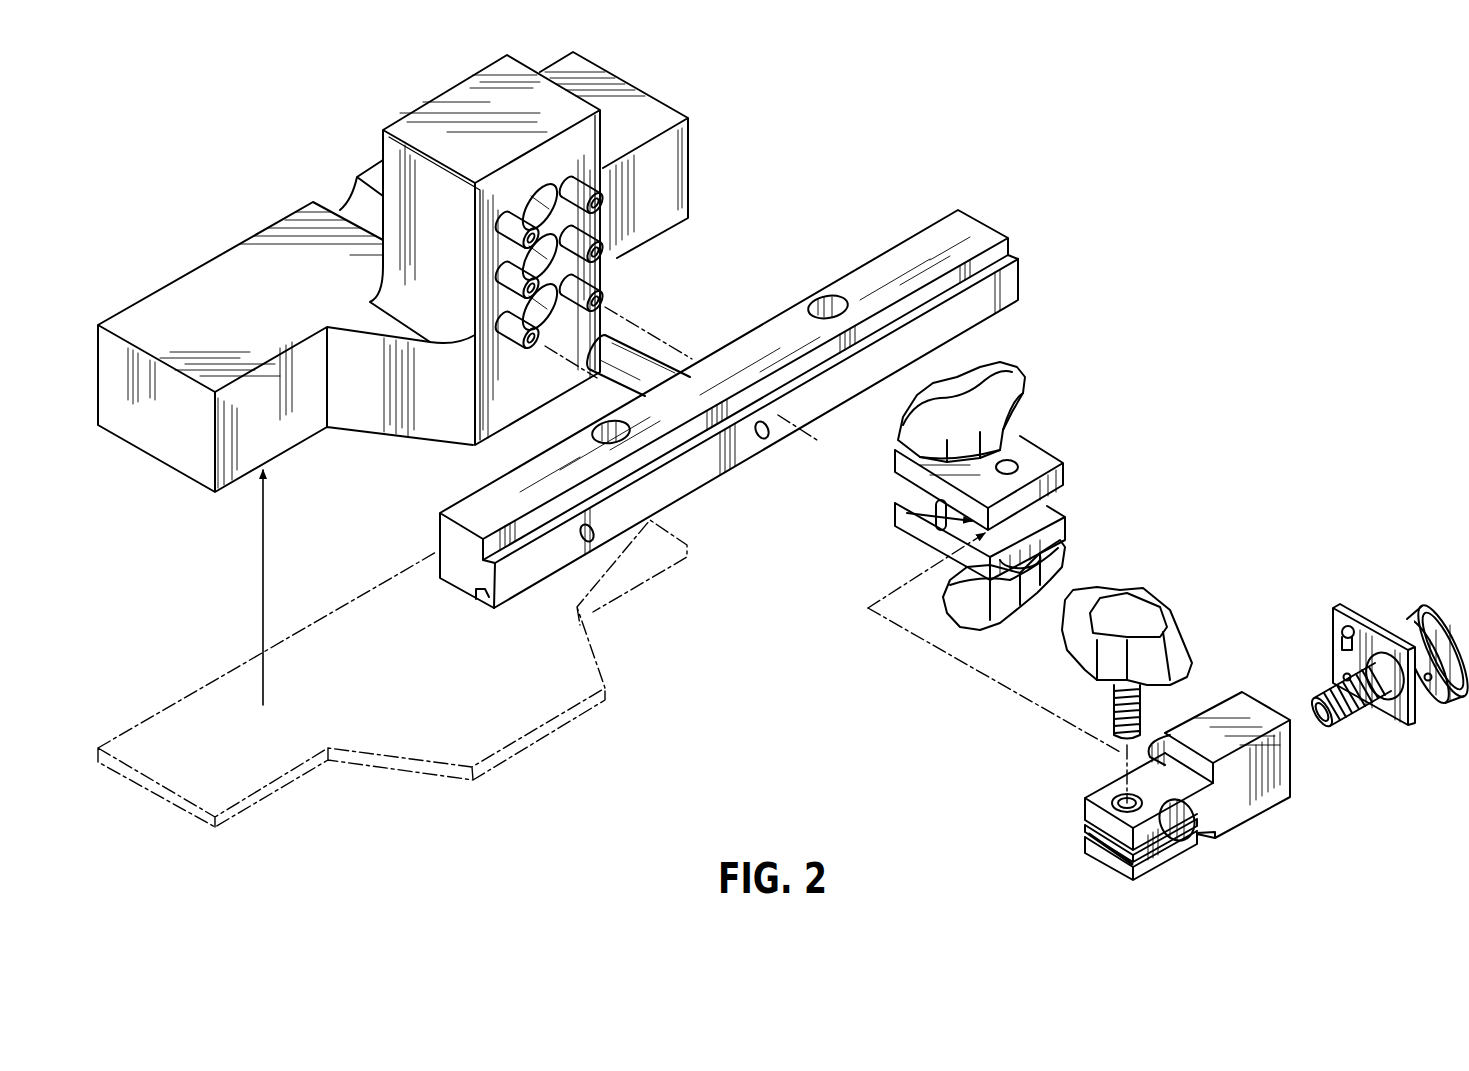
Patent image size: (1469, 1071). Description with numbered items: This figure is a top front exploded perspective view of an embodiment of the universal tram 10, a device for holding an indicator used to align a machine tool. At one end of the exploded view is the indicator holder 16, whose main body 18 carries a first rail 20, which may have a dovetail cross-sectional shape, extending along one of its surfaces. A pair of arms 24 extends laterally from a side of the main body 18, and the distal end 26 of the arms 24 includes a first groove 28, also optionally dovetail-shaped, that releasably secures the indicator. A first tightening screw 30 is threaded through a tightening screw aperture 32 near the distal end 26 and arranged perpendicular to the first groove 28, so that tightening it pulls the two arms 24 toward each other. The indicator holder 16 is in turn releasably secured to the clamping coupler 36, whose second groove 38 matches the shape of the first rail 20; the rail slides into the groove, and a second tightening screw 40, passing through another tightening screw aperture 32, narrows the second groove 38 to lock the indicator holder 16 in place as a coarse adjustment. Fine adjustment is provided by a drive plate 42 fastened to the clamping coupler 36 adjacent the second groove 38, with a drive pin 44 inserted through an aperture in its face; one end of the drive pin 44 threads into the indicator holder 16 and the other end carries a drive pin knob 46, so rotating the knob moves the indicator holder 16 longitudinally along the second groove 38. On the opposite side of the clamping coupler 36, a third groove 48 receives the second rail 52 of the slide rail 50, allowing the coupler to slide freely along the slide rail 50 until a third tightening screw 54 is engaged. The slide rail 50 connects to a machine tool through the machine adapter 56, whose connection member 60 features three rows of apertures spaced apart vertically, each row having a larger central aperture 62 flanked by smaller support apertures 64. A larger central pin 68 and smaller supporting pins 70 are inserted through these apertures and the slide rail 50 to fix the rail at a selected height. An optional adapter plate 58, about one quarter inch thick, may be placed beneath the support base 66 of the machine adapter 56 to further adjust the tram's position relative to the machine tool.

The universal tram 10 is at (1196, 185).
The indicator holder 16 is at (1161, 774).
The main body 18 is at (1233, 816).
The first rail 20 is at (1150, 750).
The arms 24 is at (1158, 838).
The distal end 26 is at (1102, 853).
The first groove 28 is at (1090, 833).
The first tightening screw 30 is at (1145, 605).
The tightening screw aperture 32 is at (1017, 468).
The clamping coupler 36 is at (1037, 426).
The second groove 38 is at (1050, 508).
The second tightening screw 40 is at (1010, 612).
The drive plate 42 is at (1342, 604).
The drive pin 44 is at (1350, 714).
The drive pin knob 46 is at (1440, 615).
The third groove 48 is at (977, 492).
The slide rail 50 is at (729, 406).
The second rail 52 is at (703, 470).
The third tightening screw 54 is at (1008, 362).
The machine adapter 56 is at (640, 88).
The adapter plate 58 is at (208, 686).
The connection member 60 is at (455, 105).
The central aperture 62 is at (532, 200).
The support aperture 64 is at (498, 270).
The support base 66 is at (220, 314).
The central pin 68 is at (645, 348).
The supporting pins 70 is at (604, 300).